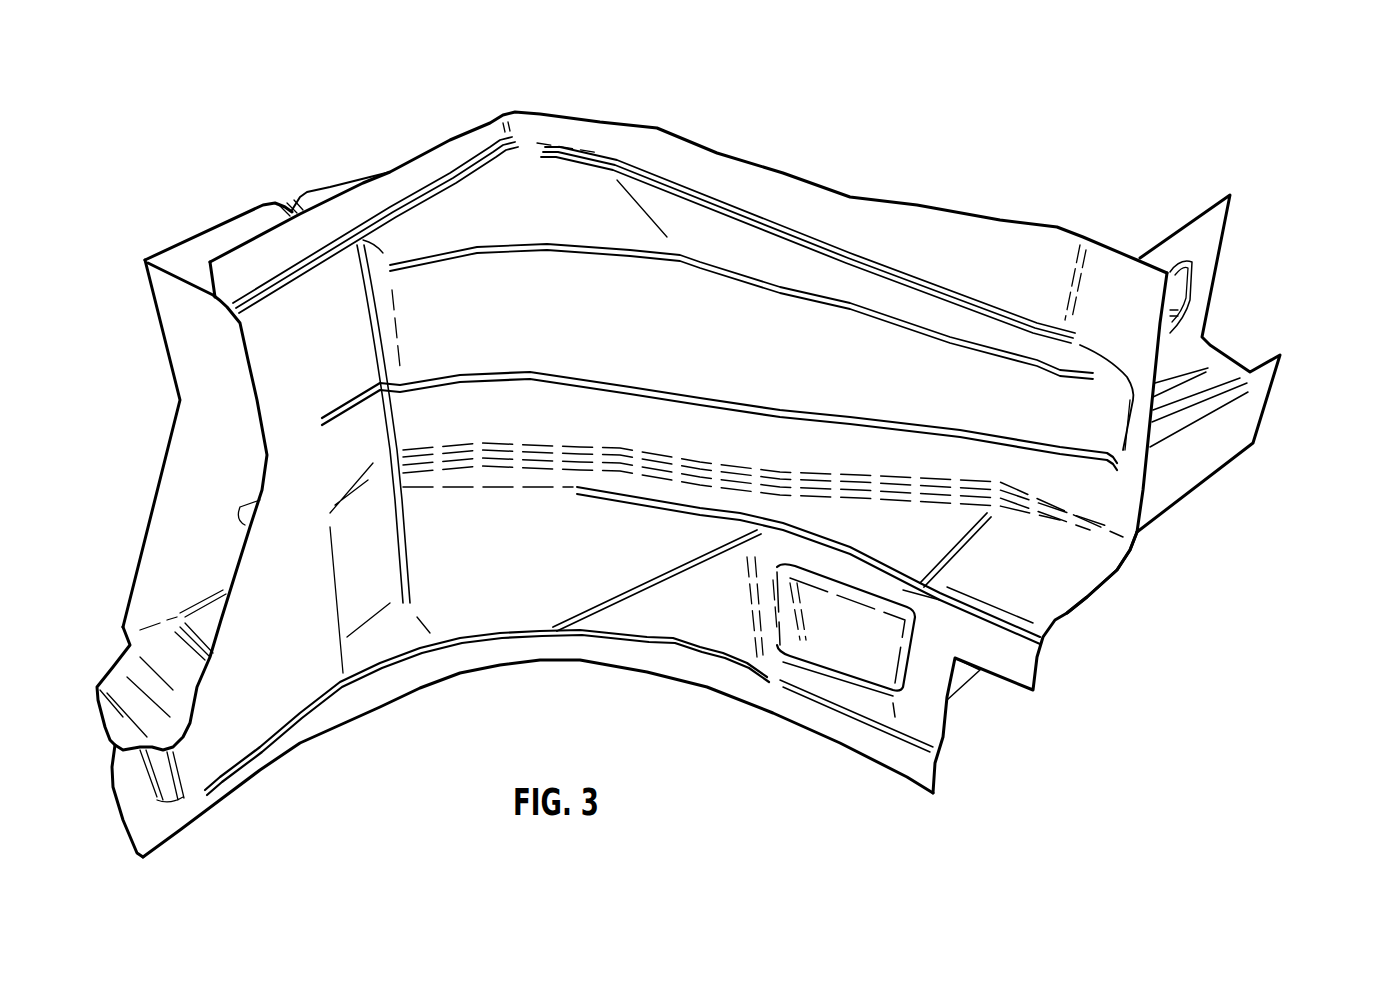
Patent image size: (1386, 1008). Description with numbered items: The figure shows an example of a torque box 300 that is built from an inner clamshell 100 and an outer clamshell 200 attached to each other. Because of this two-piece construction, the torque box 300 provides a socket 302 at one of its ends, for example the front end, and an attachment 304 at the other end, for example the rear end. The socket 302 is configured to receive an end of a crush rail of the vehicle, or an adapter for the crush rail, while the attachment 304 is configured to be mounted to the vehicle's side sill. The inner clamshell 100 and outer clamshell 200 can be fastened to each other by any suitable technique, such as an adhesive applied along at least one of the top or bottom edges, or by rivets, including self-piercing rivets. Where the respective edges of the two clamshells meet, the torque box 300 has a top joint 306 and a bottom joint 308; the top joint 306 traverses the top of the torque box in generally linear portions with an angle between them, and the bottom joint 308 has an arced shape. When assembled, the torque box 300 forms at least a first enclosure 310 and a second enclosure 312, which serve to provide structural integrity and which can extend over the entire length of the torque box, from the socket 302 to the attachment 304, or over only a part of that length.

The inner clamshell 100 is at (165, 453).
The outer clamshell 200 is at (1067, 613).
The torque box 300 is at (1168, 738).
The socket 302 is at (187, 571).
The attachment 304 is at (1230, 275).
The top joint 306 is at (593, 121).
The bottom joint 308 is at (511, 665).
The first enclosure 310 is at (534, 313).
The second enclosure 312 is at (536, 535).